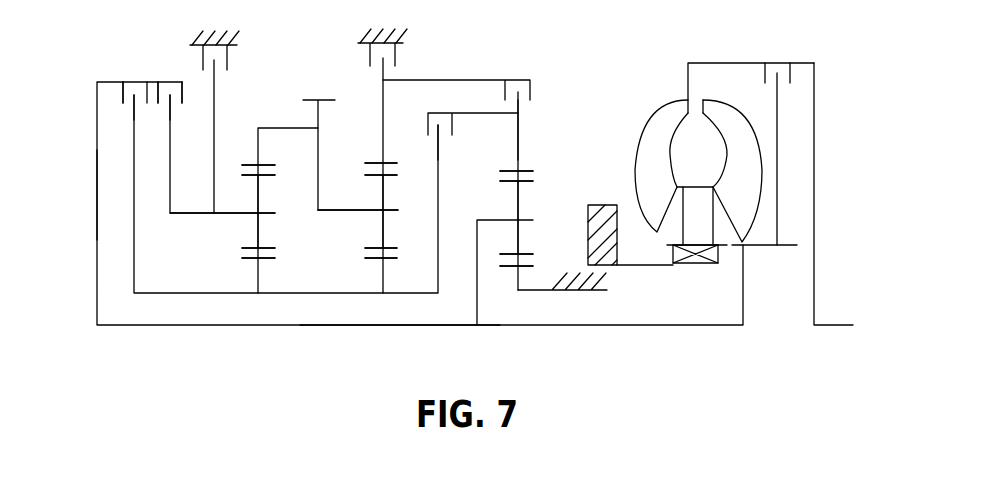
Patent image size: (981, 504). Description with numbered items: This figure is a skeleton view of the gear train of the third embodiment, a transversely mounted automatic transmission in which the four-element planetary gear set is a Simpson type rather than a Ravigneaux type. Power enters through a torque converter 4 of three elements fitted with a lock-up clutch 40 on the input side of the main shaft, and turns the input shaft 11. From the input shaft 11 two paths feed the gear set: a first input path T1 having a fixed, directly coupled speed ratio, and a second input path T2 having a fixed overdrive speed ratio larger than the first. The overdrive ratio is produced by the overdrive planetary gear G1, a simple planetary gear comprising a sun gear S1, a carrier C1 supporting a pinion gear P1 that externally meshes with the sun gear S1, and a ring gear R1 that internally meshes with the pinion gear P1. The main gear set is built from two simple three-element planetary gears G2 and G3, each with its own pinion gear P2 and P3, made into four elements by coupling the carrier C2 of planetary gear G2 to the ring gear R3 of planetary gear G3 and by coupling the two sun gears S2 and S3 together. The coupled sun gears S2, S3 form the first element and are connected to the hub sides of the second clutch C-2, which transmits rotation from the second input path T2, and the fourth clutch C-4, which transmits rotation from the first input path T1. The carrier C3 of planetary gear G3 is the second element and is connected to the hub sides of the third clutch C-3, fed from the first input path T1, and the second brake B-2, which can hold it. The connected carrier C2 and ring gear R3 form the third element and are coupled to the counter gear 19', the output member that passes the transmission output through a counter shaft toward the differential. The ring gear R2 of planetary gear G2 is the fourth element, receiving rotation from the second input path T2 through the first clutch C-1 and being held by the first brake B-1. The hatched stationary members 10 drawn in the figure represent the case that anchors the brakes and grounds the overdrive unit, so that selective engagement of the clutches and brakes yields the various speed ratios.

The torque converter 4 is at (725, 52).
The lock-up clutch 40 is at (765, 74).
The transmission case 10 is at (228, 38).
The input shaft 11 is at (353, 327).
The counter gear 19' is at (311, 131).
The first input path T1 is at (90, 194).
The second input path T2 is at (518, 142).
The first brake B-1 is at (380, 146).
The second brake B-2 is at (213, 108).
The first clutch C-1 is at (458, 171).
The second clutch C-2 is at (471, 123).
The third clutch C-3 is at (170, 88).
The fourth clutch C-4 is at (135, 88).
The overdrive planetary gear G1 is at (562, 167).
The simple planetary gear G2 is at (370, 114).
The simple planetary gear G3 is at (262, 116).
The ring gear R1 is at (510, 167).
The ring gear R2 is at (375, 162).
The ring gear R3 is at (265, 163).
The pinion gear P1 is at (523, 181).
The pinion gear P2 is at (378, 178).
The pinion gear P3 is at (281, 211).
The sun gear S1 is at (530, 277).
The sun gear S2 is at (378, 258).
The sun gear S3 is at (252, 262).
The carrier C1 is at (487, 220).
The carrier C2 is at (350, 212).
The carrier C3 is at (236, 216).